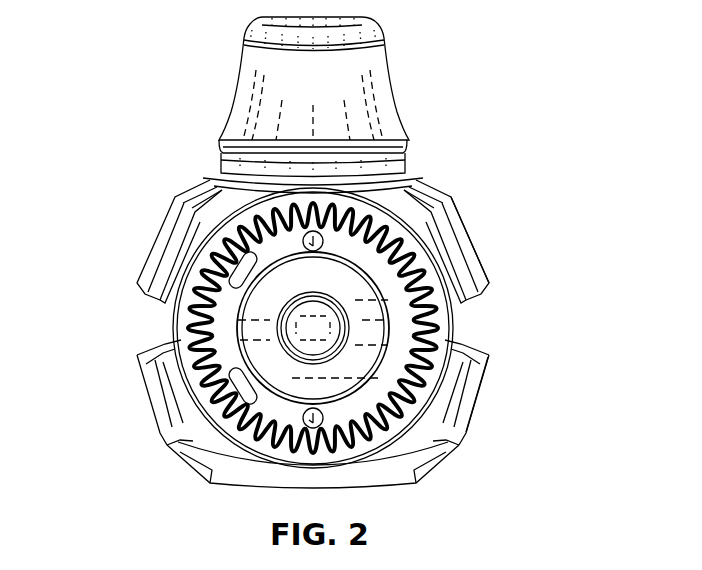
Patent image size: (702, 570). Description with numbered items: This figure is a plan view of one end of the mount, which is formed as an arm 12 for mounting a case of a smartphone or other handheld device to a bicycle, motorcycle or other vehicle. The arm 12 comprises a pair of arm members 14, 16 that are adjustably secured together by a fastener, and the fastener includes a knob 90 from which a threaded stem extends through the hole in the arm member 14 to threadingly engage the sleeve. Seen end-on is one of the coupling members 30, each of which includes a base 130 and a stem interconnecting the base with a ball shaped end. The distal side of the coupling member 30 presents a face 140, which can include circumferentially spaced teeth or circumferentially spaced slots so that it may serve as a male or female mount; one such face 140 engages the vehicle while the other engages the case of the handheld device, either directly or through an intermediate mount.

The arm 12 is at (470, 210).
The arm member 14 is at (483, 262).
The arm member 16 is at (463, 403).
The coupling member 30 is at (300, 328).
The knob 90 is at (373, 64).
The base 130 is at (200, 308).
The face 140 is at (235, 378).